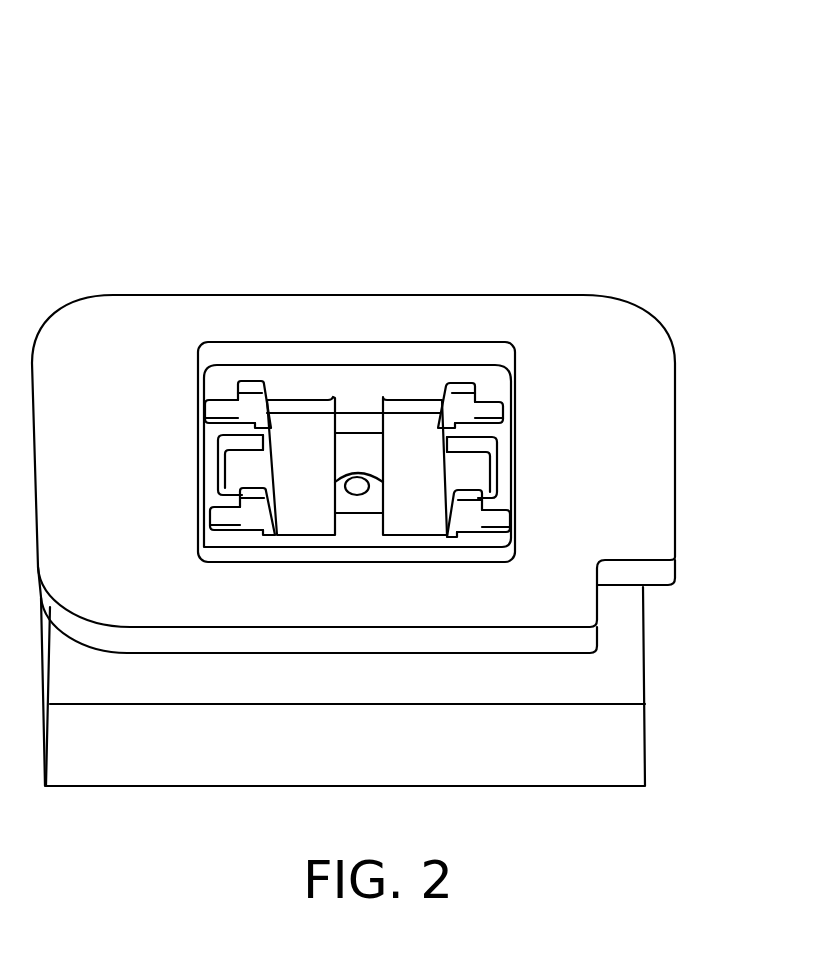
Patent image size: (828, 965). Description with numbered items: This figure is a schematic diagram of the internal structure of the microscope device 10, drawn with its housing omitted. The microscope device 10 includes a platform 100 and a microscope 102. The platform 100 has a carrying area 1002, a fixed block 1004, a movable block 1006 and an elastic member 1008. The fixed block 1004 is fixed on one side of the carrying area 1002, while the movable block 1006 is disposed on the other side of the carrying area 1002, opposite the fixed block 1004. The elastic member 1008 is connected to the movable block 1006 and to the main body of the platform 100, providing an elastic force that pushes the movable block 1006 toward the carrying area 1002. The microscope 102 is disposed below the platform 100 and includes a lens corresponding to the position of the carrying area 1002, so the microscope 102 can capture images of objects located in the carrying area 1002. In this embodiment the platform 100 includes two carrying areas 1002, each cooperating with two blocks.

The microscope device 10 is at (219, 114).
The platform 100 is at (540, 295).
The microscope 102 is at (652, 715).
The carrying area 1002 is at (305, 430).
The fixed block 1004 is at (373, 477).
The movable block 1006 is at (252, 382).
The elastic member 1008 is at (214, 413).